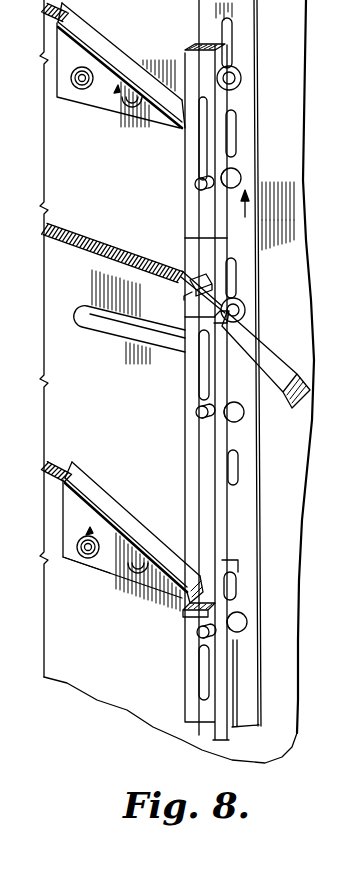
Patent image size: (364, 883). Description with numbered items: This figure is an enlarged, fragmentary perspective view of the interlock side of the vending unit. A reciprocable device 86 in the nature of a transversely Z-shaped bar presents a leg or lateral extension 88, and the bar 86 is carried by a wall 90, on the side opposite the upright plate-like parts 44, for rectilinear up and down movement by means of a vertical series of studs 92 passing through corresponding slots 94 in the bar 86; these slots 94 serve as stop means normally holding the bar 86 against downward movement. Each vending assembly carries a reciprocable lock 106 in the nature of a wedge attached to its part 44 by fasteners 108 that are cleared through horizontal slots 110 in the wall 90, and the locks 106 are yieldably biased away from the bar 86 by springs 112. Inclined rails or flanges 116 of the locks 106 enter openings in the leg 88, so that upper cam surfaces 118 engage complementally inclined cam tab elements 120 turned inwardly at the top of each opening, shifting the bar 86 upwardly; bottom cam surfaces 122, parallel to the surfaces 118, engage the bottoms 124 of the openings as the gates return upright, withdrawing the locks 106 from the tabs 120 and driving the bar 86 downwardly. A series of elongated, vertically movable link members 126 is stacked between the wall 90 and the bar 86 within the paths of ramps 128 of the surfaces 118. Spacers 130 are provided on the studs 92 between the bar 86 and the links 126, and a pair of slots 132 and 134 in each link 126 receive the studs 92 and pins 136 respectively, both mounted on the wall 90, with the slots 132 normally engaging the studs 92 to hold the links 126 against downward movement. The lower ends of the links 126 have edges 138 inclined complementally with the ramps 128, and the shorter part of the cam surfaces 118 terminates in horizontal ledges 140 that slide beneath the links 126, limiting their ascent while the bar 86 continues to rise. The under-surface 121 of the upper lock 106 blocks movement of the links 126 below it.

The plate-like part 44 is at (124, 333).
The reciprocable device 86 is at (184, 462).
The leg 88 is at (181, 247).
The wall 90 is at (95, 690).
The studs 92 is at (196, 186).
The slots 94 is at (185, 163).
The reciprocable lock 106 is at (76, 98).
The fasteners 108 is at (71, 78).
The horizontal slots 110 is at (80, 330).
The springs 112 is at (66, 242).
The inclined rails 116 is at (80, 30).
The upper cam surfaces 118 is at (107, 47).
The cam tab elements 120 is at (188, 284).
The under-surface 121 is at (110, 580).
The bottom cam surfaces 122 is at (117, 88).
The bottoms of openings 124 is at (194, 296).
The link members 126 is at (250, 117).
The ramps 128 is at (174, 128).
The spacers 130 is at (238, 177).
The slots 132 is at (238, 137).
The slots 134 is at (236, 43).
The pins 136 is at (246, 303).
The inclined edges 138 is at (229, 580).
The horizontal ledges 140 is at (134, 65).